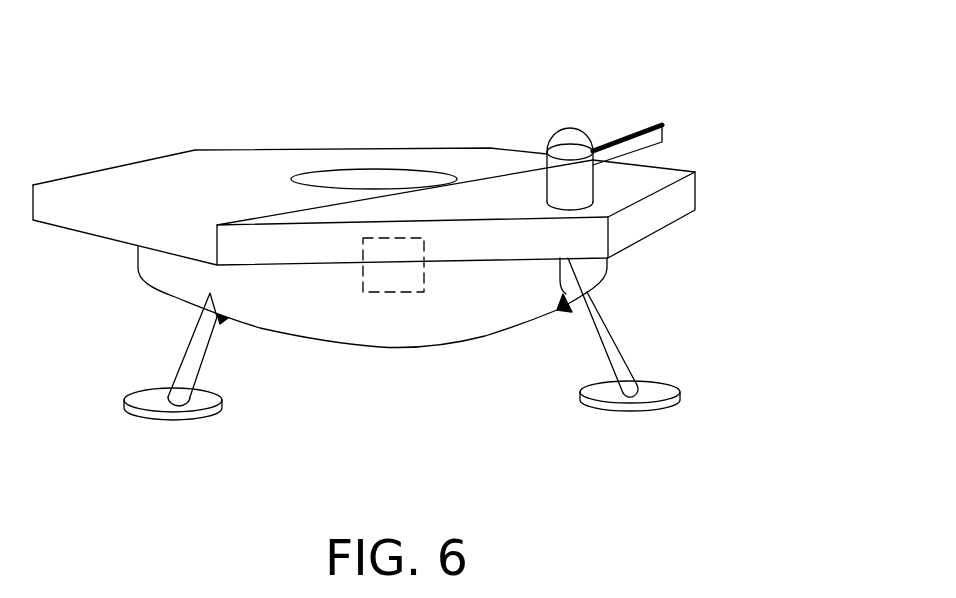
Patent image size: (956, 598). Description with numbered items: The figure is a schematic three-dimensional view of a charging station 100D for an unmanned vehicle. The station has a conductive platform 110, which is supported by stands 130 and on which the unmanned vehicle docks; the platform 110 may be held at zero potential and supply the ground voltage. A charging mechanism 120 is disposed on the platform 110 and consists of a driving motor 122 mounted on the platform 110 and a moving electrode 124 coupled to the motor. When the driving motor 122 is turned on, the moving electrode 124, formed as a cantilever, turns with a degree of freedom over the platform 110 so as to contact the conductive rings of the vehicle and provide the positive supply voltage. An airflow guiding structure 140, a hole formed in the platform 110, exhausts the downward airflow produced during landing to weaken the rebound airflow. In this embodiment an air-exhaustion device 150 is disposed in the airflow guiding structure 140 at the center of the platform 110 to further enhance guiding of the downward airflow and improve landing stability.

The charging station 100D is at (727, 142).
The platform 110 is at (180, 173).
The charging mechanism 120 is at (653, 43).
The driving motor 122 is at (570, 128).
The moving electrode 124 is at (638, 128).
The stand 130 is at (195, 355).
The airflow guiding structure 140 is at (375, 166).
The air-exhaustion device 150 is at (393, 292).